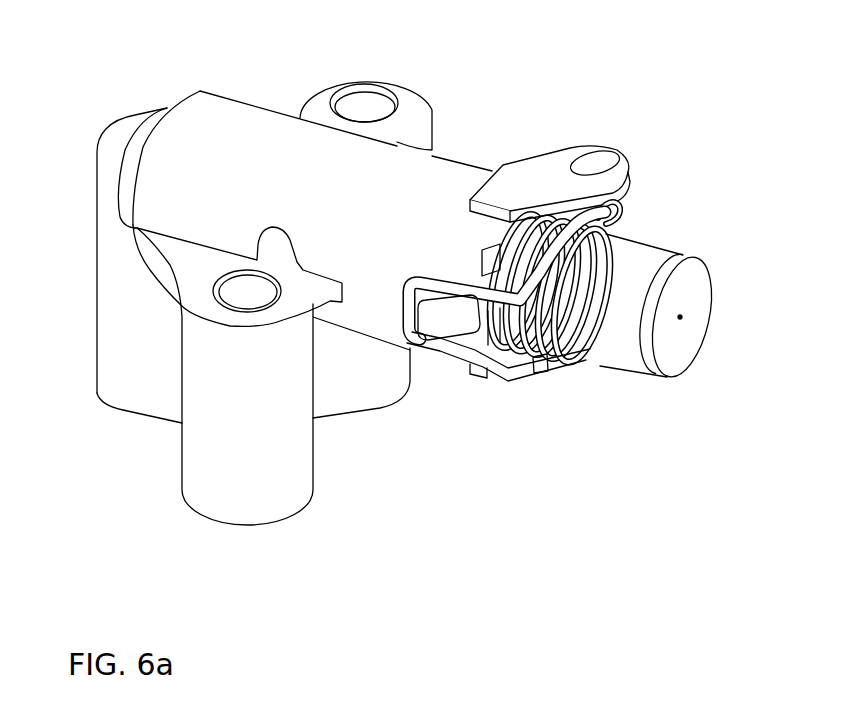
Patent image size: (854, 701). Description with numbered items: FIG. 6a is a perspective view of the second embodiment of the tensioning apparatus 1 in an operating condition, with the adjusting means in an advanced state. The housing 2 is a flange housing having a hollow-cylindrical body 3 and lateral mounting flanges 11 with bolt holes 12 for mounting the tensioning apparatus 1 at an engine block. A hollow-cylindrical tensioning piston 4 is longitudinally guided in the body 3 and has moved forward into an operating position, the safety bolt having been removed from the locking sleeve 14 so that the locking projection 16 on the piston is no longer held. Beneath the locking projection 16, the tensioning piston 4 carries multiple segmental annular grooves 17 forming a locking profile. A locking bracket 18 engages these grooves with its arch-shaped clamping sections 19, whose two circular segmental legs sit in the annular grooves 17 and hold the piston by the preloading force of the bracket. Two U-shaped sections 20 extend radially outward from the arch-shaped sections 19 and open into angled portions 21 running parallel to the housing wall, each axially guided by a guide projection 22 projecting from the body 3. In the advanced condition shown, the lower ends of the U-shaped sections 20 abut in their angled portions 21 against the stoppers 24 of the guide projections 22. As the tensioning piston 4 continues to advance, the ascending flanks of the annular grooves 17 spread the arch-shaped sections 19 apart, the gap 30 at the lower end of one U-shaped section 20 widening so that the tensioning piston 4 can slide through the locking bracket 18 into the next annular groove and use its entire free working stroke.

The tensioning apparatus 1 is at (394, 281).
The housing 2 is at (189, 316).
The hollow-cylindrical body 3 is at (264, 220).
The tensioning piston 4 is at (695, 324).
The mounting flange 11 is at (220, 265).
The bolt hole 12 is at (232, 174).
The locking sleeve 14 is at (550, 154).
The locking projection 16 is at (681, 317).
The annular grooves 17 is at (668, 305).
The locking bracket 18 is at (641, 202).
The arch-shaped clamping sections 19 is at (604, 288).
The U-shaped section 20 is at (558, 391).
The angled portion 21 is at (498, 386).
The guide projection 22 is at (449, 368).
The stopper 24 is at (447, 342).
The gap 30 is at (482, 333).